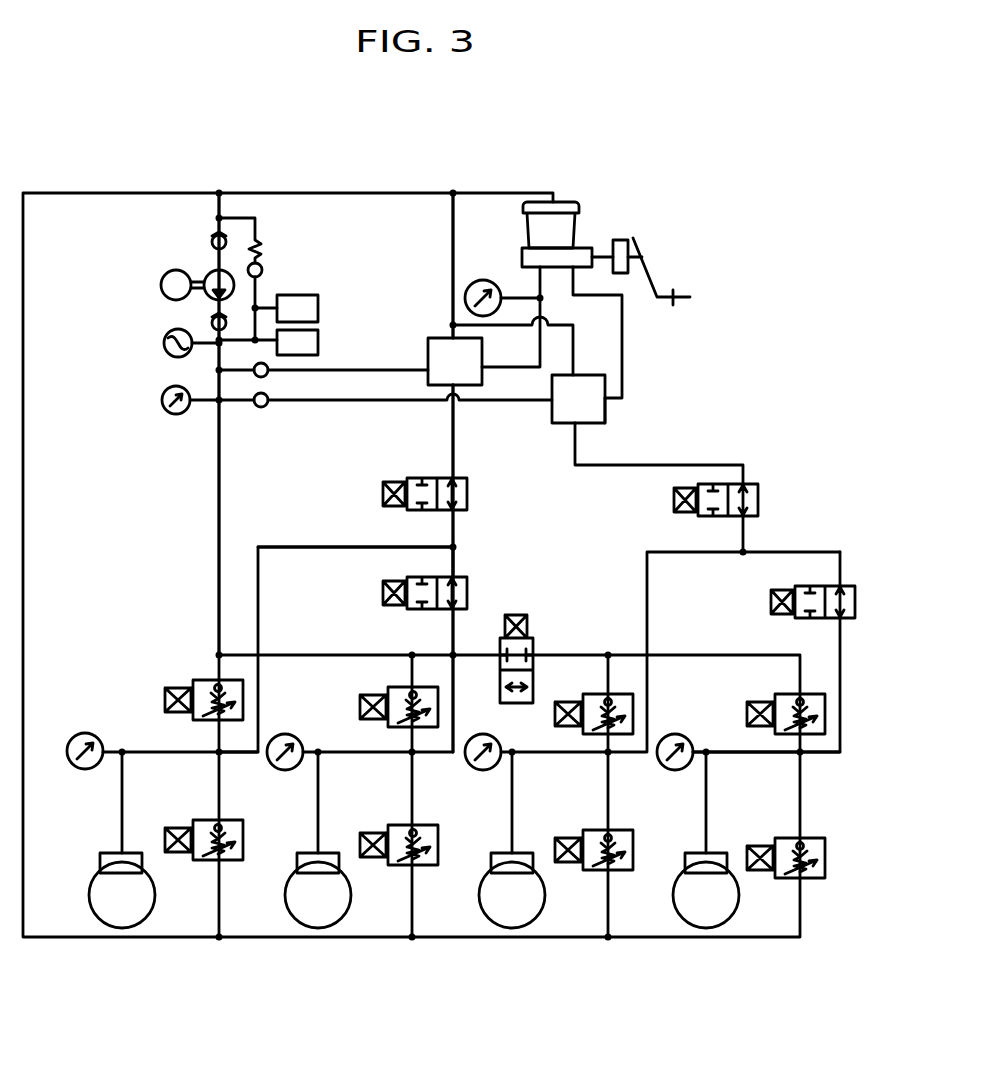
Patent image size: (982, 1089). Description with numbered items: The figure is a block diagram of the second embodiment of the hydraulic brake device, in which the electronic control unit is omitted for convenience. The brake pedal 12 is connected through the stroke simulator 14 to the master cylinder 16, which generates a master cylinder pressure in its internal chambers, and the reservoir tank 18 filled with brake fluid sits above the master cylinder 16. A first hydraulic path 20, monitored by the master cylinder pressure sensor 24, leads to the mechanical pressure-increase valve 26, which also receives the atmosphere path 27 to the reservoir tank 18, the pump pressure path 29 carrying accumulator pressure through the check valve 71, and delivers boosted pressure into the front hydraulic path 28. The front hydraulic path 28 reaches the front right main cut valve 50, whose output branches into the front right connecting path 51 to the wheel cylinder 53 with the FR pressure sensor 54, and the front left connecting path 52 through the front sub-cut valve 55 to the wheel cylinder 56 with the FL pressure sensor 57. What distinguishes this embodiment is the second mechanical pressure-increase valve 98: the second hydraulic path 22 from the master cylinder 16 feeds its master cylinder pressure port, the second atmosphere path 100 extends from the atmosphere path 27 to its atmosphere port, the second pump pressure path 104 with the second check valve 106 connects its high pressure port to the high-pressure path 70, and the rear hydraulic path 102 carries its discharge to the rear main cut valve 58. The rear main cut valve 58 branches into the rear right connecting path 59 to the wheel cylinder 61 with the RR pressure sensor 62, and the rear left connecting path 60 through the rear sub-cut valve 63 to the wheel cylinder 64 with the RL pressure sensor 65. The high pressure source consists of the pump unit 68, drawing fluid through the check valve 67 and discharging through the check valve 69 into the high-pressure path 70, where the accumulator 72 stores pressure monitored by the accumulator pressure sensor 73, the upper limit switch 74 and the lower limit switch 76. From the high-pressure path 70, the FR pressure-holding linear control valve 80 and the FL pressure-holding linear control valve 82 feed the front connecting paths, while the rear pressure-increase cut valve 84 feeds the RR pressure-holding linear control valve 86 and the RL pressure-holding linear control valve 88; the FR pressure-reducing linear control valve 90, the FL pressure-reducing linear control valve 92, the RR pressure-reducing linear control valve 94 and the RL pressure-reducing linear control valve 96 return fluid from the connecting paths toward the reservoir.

The brake pedal 12 is at (690, 297).
The stroke simulator 14 is at (628, 240).
The master cylinder 16 is at (587, 245).
The reservoir tank 18 is at (565, 203).
The first hydraulic path 20 is at (537, 343).
The second hydraulic path 22 is at (623, 372).
The master cylinder pressure sensor 24 is at (484, 280).
The mechanical pressure-increase valve 26 is at (434, 329).
The atmosphere path 27 is at (453, 232).
The front hydraulic path 28 is at (455, 455).
The pump pressure path 29 is at (360, 370).
The front right main cut valve 50 is at (468, 496).
The front right connecting path 51 is at (340, 547).
The front left connecting path 52 is at (462, 560).
The wheel cylinder 53 is at (110, 853).
The FR pressure sensor 54 is at (80, 732).
The front sub-cut valve 55 is at (407, 610).
The wheel cylinder 56 is at (305, 853).
The FL pressure sensor 57 is at (305, 710).
The rear main cut valve 58 is at (765, 493).
The rear right connecting path 59 is at (655, 552).
The rear left connecting path 60 is at (818, 550).
The wheel cylinder 61 is at (498, 853).
The RR pressure sensor 62 is at (483, 735).
The rear sub-cut valve 63 is at (858, 605).
The wheel cylinder 64 is at (695, 853).
The RL pressure sensor 65 is at (683, 735).
The check valve 67 is at (212, 242).
The pump unit 68 is at (204, 280).
The check valve 69 is at (212, 323).
The high-pressure path 70 is at (219, 440).
The check valve 71 is at (268, 377).
The accumulator 72 is at (165, 350).
The accumulator pressure sensor 73 is at (162, 400).
The upper limit switch 74 is at (296, 295).
The lower limit switch 76 is at (320, 340).
The FR pressure-holding linear control valve 80 is at (205, 678).
The FL pressure-holding linear control valve 82 is at (393, 688).
The rear pressure-increase cut valve 84 is at (533, 658).
The RR pressure-holding linear control valve 86 is at (590, 695).
The RL pressure-holding linear control valve 88 is at (783, 692).
The FR pressure-reducing linear control valve 90 is at (205, 820).
The FL pressure-reducing linear control valve 92 is at (400, 825).
The RR pressure-reducing linear control valve 94 is at (595, 830).
The RL pressure-reducing linear control valve 96 is at (826, 848).
The second mechanical pressure-increase valve 98 is at (615, 412).
The second atmosphere path 100 is at (575, 360).
The rear hydraulic path 102 is at (592, 466).
The second pump pressure path 104 is at (358, 400).
The second check valve 106 is at (264, 408).